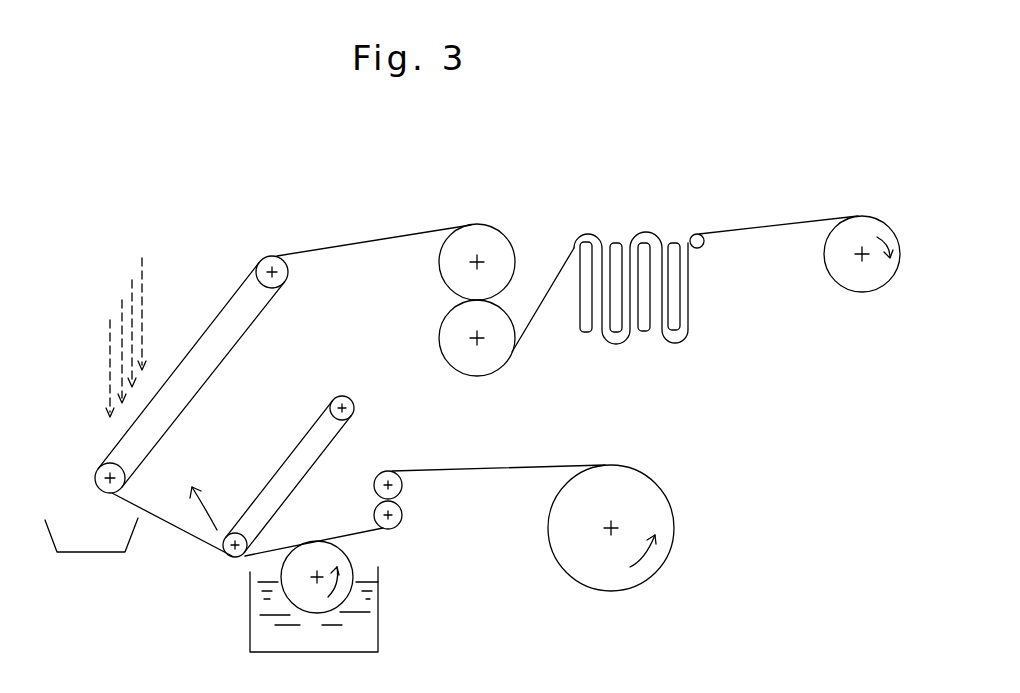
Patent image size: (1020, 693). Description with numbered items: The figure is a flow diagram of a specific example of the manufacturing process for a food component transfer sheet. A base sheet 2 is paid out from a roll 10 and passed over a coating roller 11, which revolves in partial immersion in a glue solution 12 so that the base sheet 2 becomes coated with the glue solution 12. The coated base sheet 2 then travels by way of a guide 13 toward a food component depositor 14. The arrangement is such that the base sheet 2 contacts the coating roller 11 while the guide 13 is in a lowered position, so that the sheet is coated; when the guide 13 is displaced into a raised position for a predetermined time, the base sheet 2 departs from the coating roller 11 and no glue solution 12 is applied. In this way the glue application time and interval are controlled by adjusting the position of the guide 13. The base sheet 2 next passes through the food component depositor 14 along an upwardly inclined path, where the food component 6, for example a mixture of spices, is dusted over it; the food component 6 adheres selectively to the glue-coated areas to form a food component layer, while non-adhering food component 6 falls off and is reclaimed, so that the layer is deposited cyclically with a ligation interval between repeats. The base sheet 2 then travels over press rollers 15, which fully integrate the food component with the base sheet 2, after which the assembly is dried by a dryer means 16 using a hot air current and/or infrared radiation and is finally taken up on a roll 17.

The base sheet 2 is at (530, 467).
The food component 6 is at (120, 357).
The roll 10 is at (655, 495).
The coating roller 11 is at (345, 555).
The glue solution 12 is at (367, 635).
The guide 13 is at (283, 477).
The food component depositor 14 is at (108, 453).
The press rollers 15 is at (495, 240).
The dryer means 16 is at (615, 212).
The roll 17 is at (855, 227).